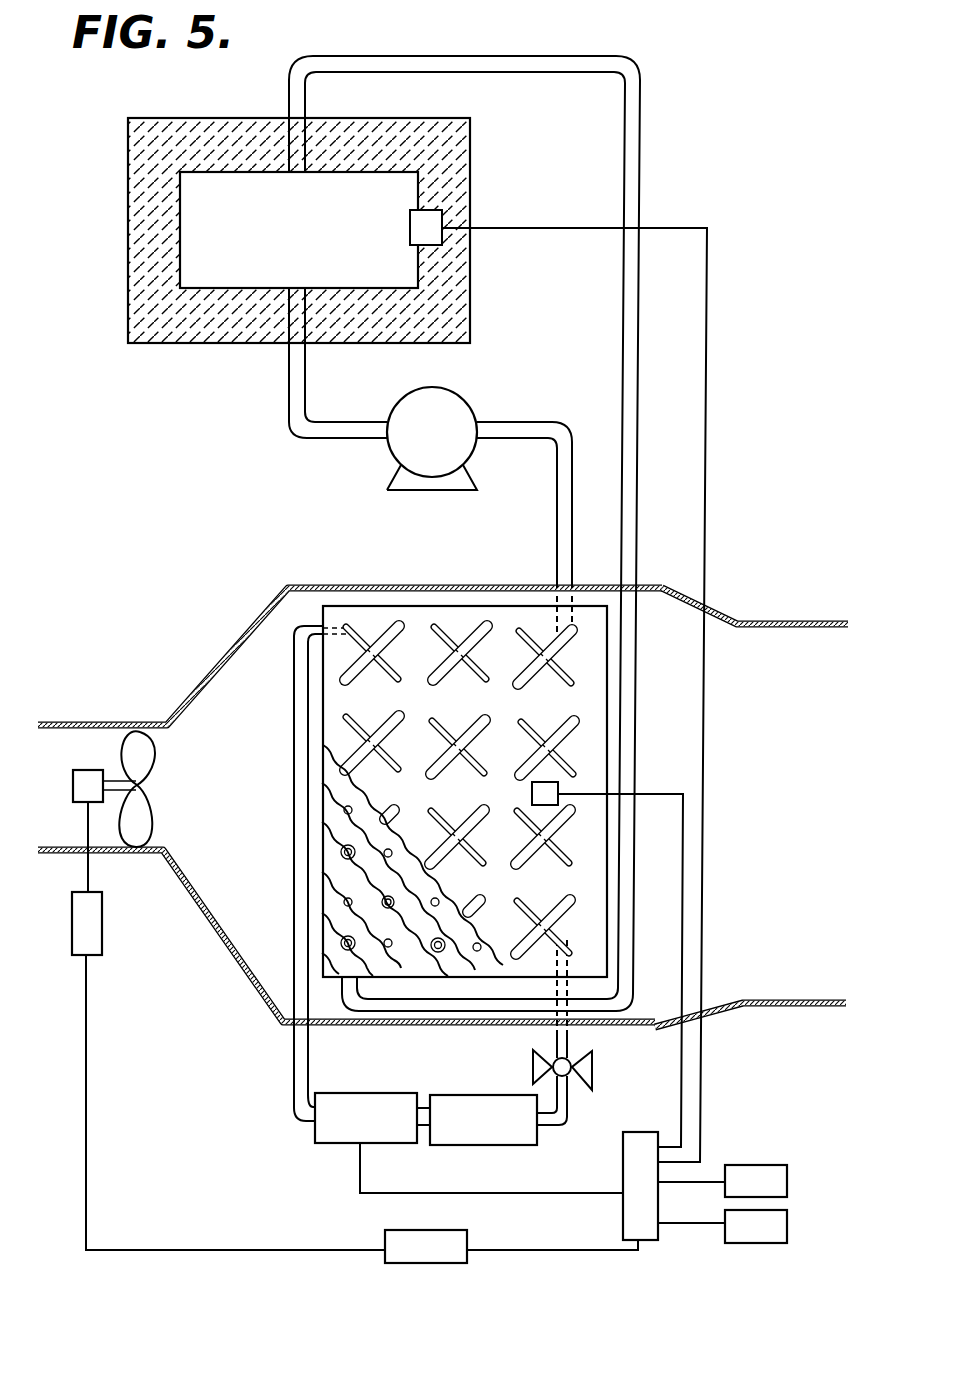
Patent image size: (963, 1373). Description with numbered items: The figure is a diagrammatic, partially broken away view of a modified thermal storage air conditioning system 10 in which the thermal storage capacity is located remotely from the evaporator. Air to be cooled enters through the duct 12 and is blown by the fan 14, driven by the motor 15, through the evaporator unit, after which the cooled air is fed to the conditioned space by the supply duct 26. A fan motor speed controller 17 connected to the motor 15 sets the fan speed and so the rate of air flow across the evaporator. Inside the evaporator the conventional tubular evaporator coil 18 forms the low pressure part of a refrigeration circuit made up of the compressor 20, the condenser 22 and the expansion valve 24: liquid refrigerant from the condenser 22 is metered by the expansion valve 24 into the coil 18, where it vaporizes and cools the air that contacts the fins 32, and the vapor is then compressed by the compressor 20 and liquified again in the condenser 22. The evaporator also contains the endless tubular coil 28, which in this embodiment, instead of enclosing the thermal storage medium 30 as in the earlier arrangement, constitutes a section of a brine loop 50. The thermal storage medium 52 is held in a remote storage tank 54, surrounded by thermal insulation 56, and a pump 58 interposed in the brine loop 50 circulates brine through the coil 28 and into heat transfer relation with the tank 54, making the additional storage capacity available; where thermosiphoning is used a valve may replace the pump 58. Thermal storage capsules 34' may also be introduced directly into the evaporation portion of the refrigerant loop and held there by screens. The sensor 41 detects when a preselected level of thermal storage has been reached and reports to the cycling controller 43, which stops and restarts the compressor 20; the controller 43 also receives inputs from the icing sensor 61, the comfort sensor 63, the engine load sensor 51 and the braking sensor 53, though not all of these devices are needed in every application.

The air conditioning system 10 is at (243, 1011).
The duct 12 is at (88, 722).
The fan 14 is at (145, 762).
The motor 15 is at (90, 784).
The fan motor speed controller 17 is at (104, 922).
The evaporator coil 18 is at (430, 634).
The compressor 20 is at (378, 1108).
The condenser 22 is at (483, 1112).
The expansion valve 24 is at (590, 1068).
The supply duct 26 is at (772, 621).
The coil 28 is at (533, 640).
The thermal storage medium 30 is at (566, 831).
The fins 32 is at (352, 880).
The thermal storage capsules 34' is at (472, 728).
The sensor 41 is at (411, 222).
The cycling controller 43 is at (630, 1154).
The brine loop 50 is at (288, 385).
The engine load sensor 51 is at (783, 1180).
The thermal storage medium 52 is at (205, 245).
The braking sensor 53 is at (783, 1222).
The remote storage tank 54 is at (178, 203).
The thermal insulation 56 is at (150, 150).
The pump 58 is at (462, 407).
The icing sensor 61 is at (532, 793).
The comfort sensor 63 is at (461, 1240).